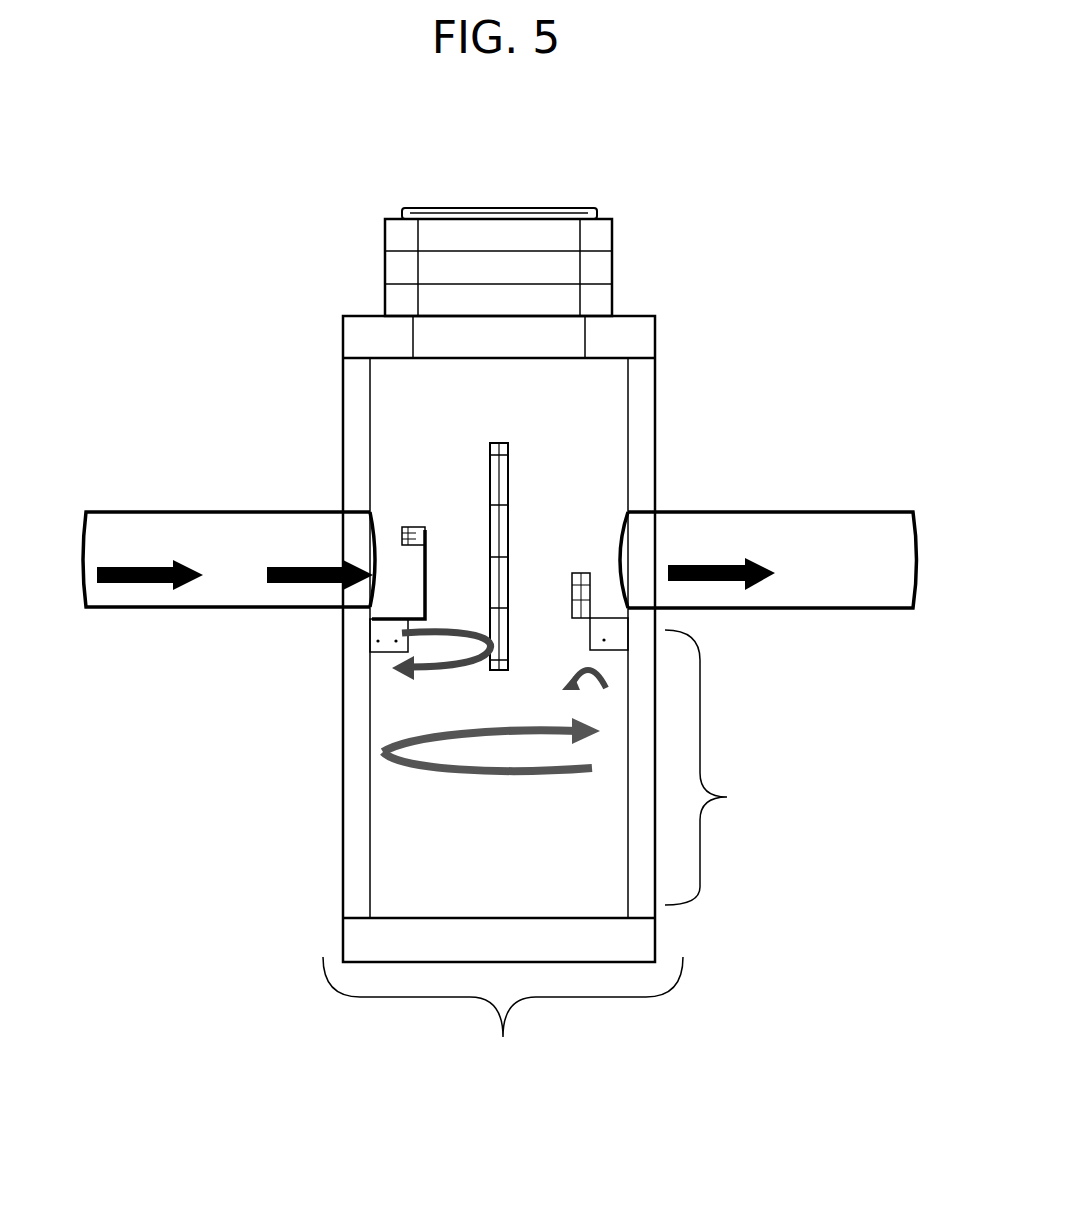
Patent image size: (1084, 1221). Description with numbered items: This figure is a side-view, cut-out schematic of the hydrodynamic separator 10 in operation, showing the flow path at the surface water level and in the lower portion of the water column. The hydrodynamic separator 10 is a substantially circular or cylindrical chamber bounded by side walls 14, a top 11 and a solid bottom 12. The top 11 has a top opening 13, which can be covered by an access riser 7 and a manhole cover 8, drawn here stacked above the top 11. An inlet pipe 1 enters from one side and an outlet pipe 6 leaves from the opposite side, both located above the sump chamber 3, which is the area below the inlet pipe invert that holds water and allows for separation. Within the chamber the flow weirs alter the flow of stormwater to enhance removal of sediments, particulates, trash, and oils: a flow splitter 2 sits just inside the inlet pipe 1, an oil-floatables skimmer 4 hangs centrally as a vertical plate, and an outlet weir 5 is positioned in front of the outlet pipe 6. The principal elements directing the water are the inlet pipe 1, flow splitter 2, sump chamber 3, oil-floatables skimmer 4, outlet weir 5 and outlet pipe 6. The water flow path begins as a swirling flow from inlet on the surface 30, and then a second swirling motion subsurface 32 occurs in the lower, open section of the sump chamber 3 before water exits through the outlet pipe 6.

The inlet pipe 1 is at (317, 510).
The flow splitter 2 is at (420, 603).
The sump chamber 3 is at (727, 797).
The oil-floatables skimmer 4 is at (510, 447).
The outlet weir 5 is at (614, 636).
The outlet pipe 6 is at (723, 608).
The access riser 7 is at (602, 245).
The manhole cover 8 is at (467, 212).
The hydrodynamic separator 10 is at (503, 702).
The top 11 is at (383, 337).
The bottom 12 is at (635, 933).
The top opening 13 is at (565, 337).
The side walls 14 is at (353, 888).
The swirling flow from inlet on the surface 30 is at (396, 668).
The second swirling motion subsurface 32 is at (383, 757).